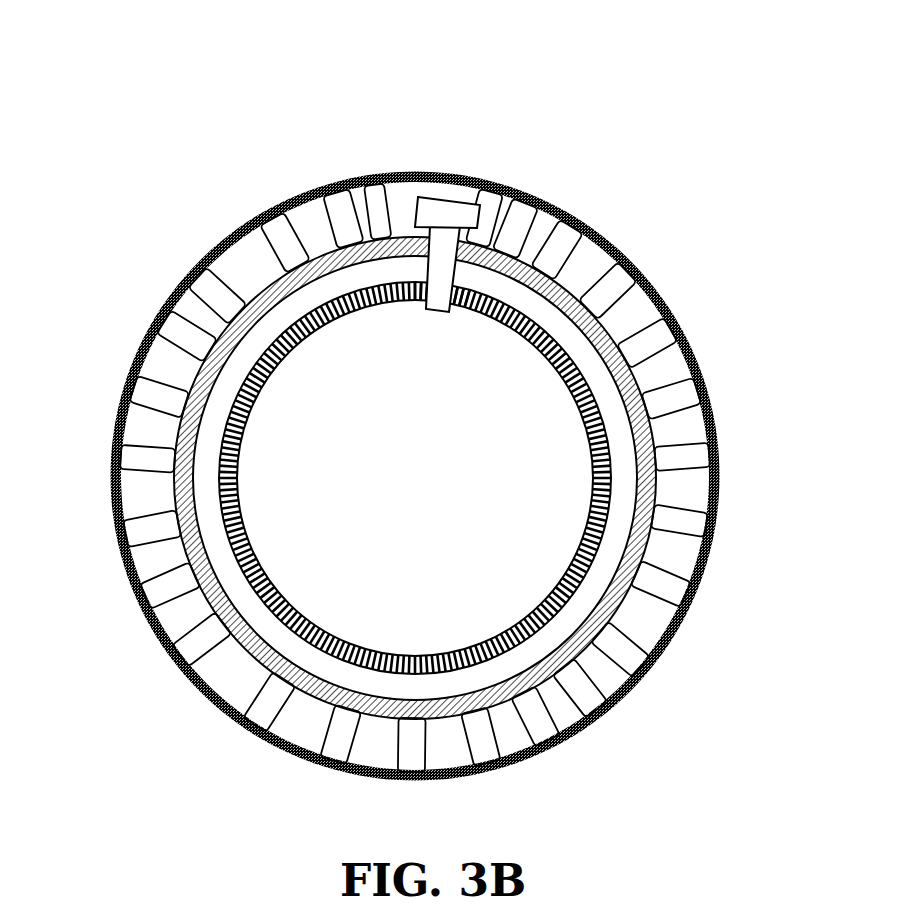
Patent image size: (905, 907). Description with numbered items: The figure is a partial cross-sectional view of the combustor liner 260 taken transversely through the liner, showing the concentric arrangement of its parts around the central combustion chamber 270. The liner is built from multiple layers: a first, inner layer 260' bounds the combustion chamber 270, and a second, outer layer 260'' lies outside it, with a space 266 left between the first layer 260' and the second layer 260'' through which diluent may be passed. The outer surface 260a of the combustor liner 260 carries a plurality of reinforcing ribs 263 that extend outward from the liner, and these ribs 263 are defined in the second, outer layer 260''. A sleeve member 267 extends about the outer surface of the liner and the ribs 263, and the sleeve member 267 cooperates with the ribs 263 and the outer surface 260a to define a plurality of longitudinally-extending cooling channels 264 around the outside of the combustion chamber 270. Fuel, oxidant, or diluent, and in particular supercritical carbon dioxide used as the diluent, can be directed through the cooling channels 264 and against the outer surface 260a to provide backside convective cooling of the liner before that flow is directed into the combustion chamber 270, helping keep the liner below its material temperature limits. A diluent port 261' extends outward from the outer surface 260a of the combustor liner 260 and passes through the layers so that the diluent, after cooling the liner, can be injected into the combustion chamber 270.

The combustor liner 260 is at (400, 403).
The outer surface of the combustor liner 260a is at (383, 239).
The first, inner layer of the combustor liner 260' is at (457, 468).
The second, outer layer of the combustor liner 260'' is at (552, 205).
The diluent port 261' is at (460, 199).
The rib 263 is at (234, 282).
The cooling channel 264 is at (196, 306).
The space 266 is at (199, 435).
The sleeve member 267 is at (716, 424).
The combustion chamber 270 is at (282, 485).